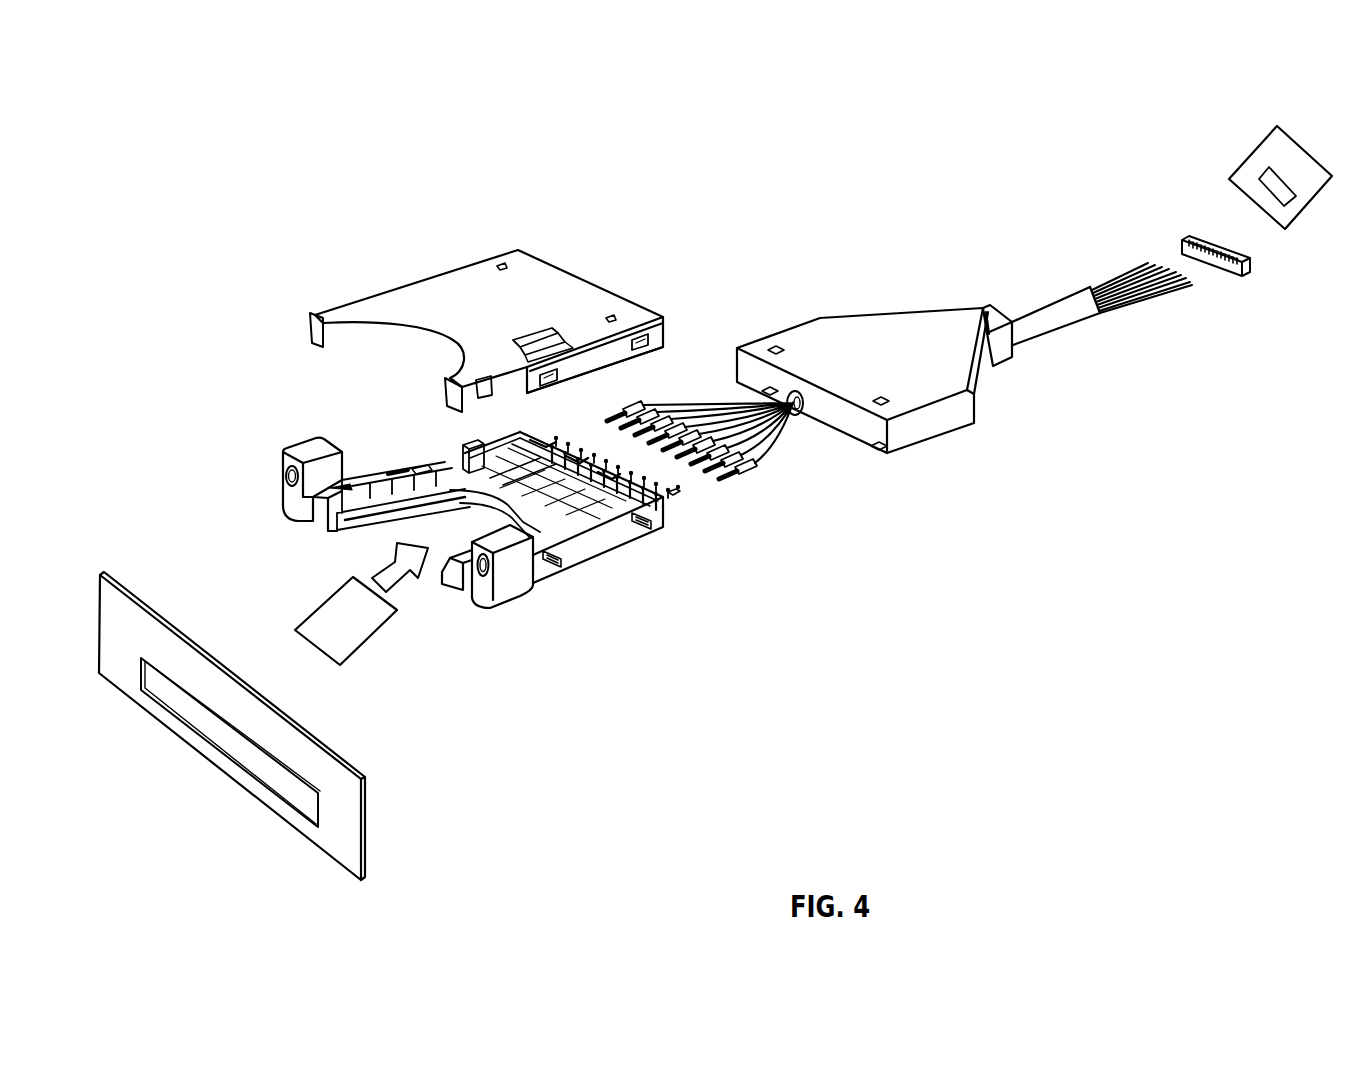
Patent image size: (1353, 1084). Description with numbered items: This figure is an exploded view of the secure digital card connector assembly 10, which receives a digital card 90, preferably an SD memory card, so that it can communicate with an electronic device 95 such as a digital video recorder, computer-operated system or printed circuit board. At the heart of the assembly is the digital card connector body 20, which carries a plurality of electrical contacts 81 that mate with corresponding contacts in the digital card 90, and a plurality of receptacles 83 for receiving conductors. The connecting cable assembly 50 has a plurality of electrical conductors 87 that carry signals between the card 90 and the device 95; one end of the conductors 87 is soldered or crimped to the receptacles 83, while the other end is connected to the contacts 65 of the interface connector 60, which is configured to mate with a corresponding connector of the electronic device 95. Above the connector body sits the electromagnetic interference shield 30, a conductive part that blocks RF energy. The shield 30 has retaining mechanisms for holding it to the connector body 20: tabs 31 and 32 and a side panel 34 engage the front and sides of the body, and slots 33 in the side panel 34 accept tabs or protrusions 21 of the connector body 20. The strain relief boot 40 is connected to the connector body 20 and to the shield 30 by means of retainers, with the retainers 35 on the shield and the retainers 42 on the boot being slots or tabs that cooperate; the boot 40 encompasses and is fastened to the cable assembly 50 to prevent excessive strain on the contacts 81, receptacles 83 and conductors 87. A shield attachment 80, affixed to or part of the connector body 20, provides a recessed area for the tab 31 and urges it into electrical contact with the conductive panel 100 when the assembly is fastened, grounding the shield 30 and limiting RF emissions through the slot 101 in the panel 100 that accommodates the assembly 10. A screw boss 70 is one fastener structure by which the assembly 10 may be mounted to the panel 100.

The secure digital card connector assembly 10 is at (781, 211).
The digital card connector body 20 is at (494, 525).
The tabs or protrusions 21 is at (644, 528).
The electromagnetic interference shield 30 is at (491, 308).
The tab 31 is at (314, 334).
The tab 32 is at (486, 391).
The slots 33 is at (650, 341).
The side panel 34 is at (606, 356).
The retainers 35 is at (502, 255).
The strain relief boot 40 is at (862, 379).
The retainers 42 is at (771, 347).
The connecting cable assembly 50 is at (1073, 317).
The interface connector 60 is at (1216, 252).
The contacts 65 is at (1220, 246).
The screw boss 70 is at (513, 584).
The shield attachment 80 is at (320, 518).
The electrical contacts 81 is at (468, 448).
The receptacles 83 is at (680, 492).
The electrical conductors 87 is at (767, 455).
The digital card 90 is at (329, 594).
The electronic device 95 is at (1306, 146).
The panel 100 is at (268, 726).
The slot 101 is at (308, 768).